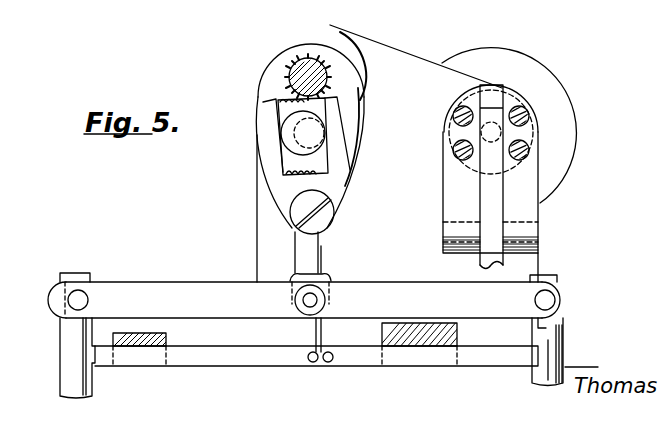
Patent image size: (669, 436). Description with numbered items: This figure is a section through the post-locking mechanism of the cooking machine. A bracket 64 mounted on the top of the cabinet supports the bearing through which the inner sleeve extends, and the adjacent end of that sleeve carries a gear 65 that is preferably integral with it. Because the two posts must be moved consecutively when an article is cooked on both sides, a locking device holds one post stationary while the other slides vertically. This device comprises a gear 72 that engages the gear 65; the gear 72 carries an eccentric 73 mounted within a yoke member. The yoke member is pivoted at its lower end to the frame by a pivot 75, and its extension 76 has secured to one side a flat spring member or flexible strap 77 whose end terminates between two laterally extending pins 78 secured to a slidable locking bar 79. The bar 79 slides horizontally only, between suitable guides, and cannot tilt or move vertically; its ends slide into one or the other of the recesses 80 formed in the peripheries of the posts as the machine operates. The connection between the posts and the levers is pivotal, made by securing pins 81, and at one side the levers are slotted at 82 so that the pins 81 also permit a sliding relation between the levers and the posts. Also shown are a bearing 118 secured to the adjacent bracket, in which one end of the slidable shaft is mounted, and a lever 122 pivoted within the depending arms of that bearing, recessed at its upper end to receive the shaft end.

The bracket 64 is at (379, 153).
The gear 65 is at (313, 70).
The gear 72 is at (318, 162).
The eccentric 73 is at (313, 132).
The pivot 75 is at (299, 210).
The extension 76 is at (304, 255).
The flat spring member 77 is at (322, 270).
The laterally extending pins 78 is at (328, 363).
The slidable locking bar 79 is at (237, 355).
The recesses 80 is at (92, 353).
The securing pins 81 is at (548, 300).
The slot 82 is at (83, 292).
The bearing 118 is at (528, 131).
The lever 122 is at (487, 210).